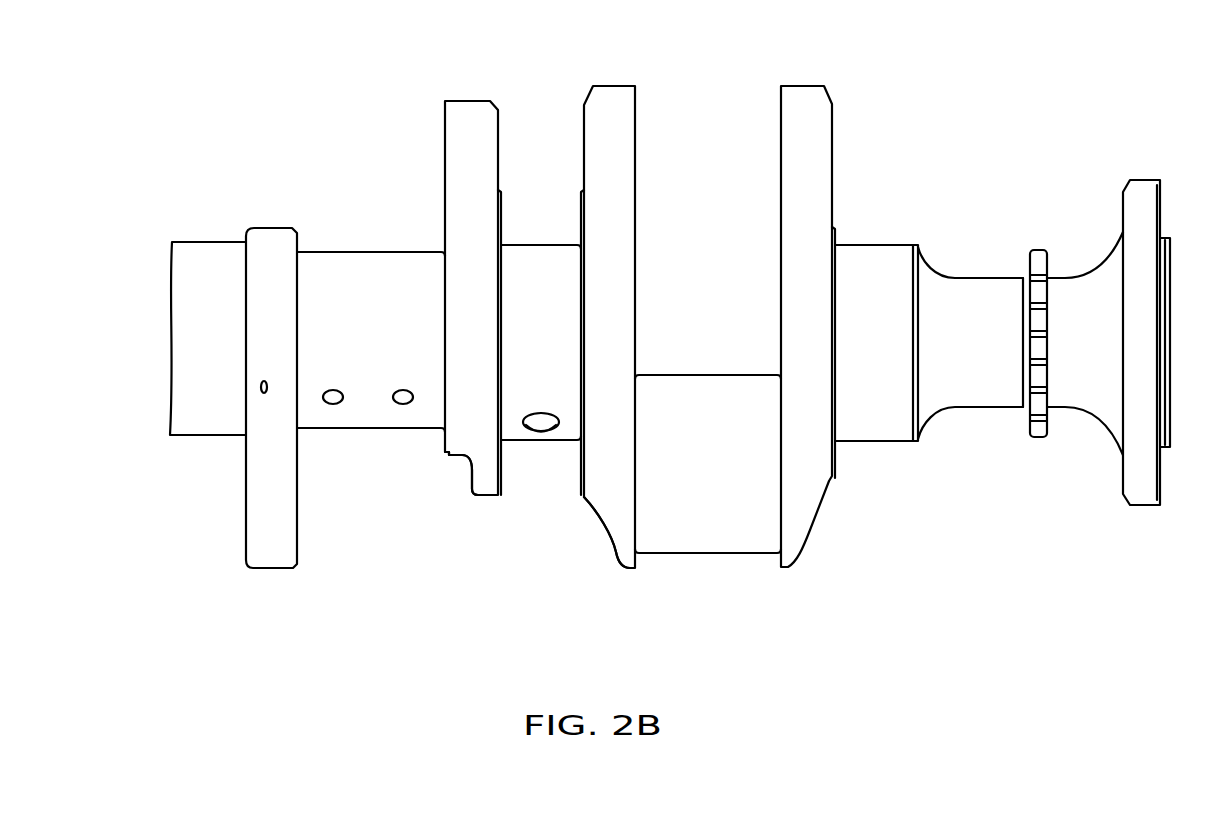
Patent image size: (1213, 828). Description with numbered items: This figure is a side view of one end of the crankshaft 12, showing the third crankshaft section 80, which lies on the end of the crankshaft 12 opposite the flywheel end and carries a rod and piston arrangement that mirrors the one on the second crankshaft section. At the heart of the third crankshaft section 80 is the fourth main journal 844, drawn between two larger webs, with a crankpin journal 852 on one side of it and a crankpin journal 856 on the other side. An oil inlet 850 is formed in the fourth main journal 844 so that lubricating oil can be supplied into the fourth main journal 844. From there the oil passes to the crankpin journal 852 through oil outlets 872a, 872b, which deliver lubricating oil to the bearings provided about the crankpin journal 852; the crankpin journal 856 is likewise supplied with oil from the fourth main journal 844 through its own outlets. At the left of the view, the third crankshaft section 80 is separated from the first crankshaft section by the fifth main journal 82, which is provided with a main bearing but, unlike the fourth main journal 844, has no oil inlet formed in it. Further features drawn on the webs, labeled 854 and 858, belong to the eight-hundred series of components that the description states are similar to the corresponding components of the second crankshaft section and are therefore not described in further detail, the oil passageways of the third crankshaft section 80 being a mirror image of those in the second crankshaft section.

The crankshaft 12 is at (970, 268).
The third crankshaft section 80 is at (772, 60).
The fifth main journal 82 is at (205, 242).
The fourth main journal 844 is at (549, 250).
The oil inlet 850 is at (540, 433).
The crankpin journal 852 is at (371, 389).
The counterweight notch 854 is at (472, 479).
The crankpin journal 856 is at (722, 557).
The web fillet 858 is at (611, 544).
The oil outlet 872a is at (333, 406).
The oil outlet 872b is at (403, 406).